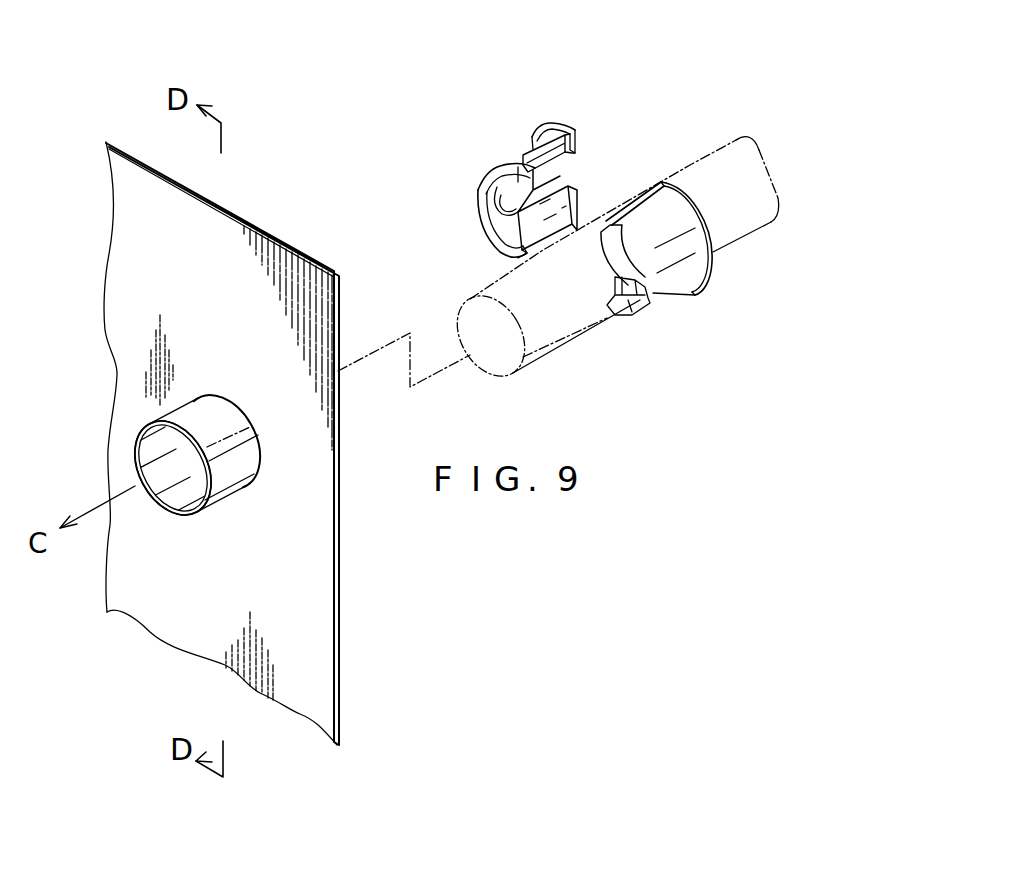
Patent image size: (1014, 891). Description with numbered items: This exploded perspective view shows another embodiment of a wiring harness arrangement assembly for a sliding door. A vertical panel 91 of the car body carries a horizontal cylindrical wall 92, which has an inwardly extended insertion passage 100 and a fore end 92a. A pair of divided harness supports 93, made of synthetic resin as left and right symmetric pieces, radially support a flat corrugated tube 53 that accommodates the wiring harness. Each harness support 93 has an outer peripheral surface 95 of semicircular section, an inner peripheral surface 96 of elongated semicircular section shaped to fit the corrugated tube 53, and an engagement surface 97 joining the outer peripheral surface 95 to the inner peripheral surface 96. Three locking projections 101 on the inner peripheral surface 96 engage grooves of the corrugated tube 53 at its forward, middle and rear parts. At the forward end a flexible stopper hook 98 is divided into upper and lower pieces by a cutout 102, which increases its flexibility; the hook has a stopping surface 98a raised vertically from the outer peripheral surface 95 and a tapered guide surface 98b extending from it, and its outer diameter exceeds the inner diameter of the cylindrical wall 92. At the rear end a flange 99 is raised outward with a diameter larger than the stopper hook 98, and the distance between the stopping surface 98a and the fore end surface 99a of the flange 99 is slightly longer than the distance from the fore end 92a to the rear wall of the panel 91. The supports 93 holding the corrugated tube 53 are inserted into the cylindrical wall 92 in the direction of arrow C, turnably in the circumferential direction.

The vertical panel 91 is at (317, 533).
The cylindrical wall 92 is at (170, 491).
The fore end of the cylindrical wall 92a is at (137, 441).
The insertion passage 100 is at (178, 486).
The corrugated tube 53 is at (538, 346).
The harness support 93 is at (598, 151).
The outer peripheral surface 95 is at (503, 130).
The inner peripheral surface 96 is at (489, 238).
The engagement surface 97 is at (579, 143).
The stopper hook 98 is at (481, 175).
The stopping surface 98a is at (490, 137).
The tapered guide surface 98b is at (480, 166).
The flange 99 is at (563, 127).
The fore end surface of the flange 99a is at (543, 122).
The locking projection 101 is at (575, 188).
The cutout 102 is at (482, 197).